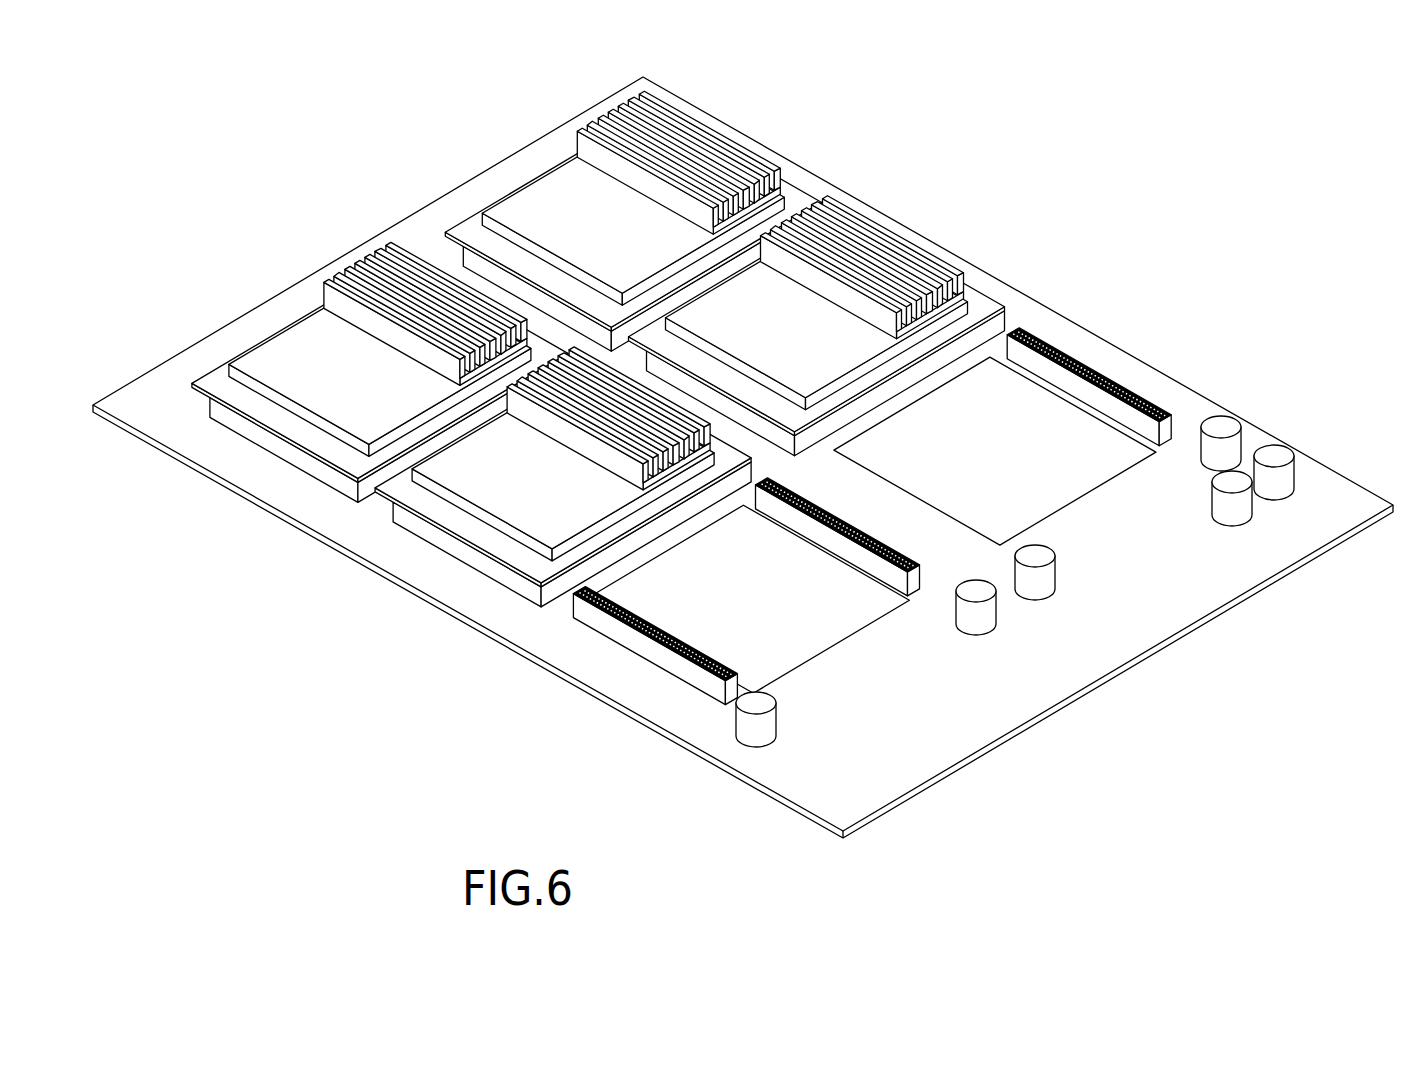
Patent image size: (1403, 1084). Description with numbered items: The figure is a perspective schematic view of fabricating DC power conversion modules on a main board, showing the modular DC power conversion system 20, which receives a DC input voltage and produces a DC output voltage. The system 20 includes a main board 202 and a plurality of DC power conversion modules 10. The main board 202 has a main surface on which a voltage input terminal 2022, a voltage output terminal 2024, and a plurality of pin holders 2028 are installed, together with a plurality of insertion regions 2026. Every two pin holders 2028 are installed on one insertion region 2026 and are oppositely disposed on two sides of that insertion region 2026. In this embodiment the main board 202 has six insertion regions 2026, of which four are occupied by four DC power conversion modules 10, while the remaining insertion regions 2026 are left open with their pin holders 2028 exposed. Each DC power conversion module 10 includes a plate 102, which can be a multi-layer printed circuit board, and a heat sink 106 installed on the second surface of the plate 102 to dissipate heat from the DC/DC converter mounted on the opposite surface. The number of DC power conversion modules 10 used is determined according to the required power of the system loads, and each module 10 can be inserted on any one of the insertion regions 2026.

The DC power conversion module 10 is at (597, 218).
The plate 102 is at (473, 232).
The heat sink 106 is at (715, 135).
The modular DC power conversion system 20 is at (743, 457).
The main board 202 is at (980, 725).
The voltage input terminal 2022 is at (742, 720).
The voltage output terminal 2024 is at (1276, 455).
The insertion region 2026 is at (1043, 403).
The pin holder 2028 is at (277, 438).